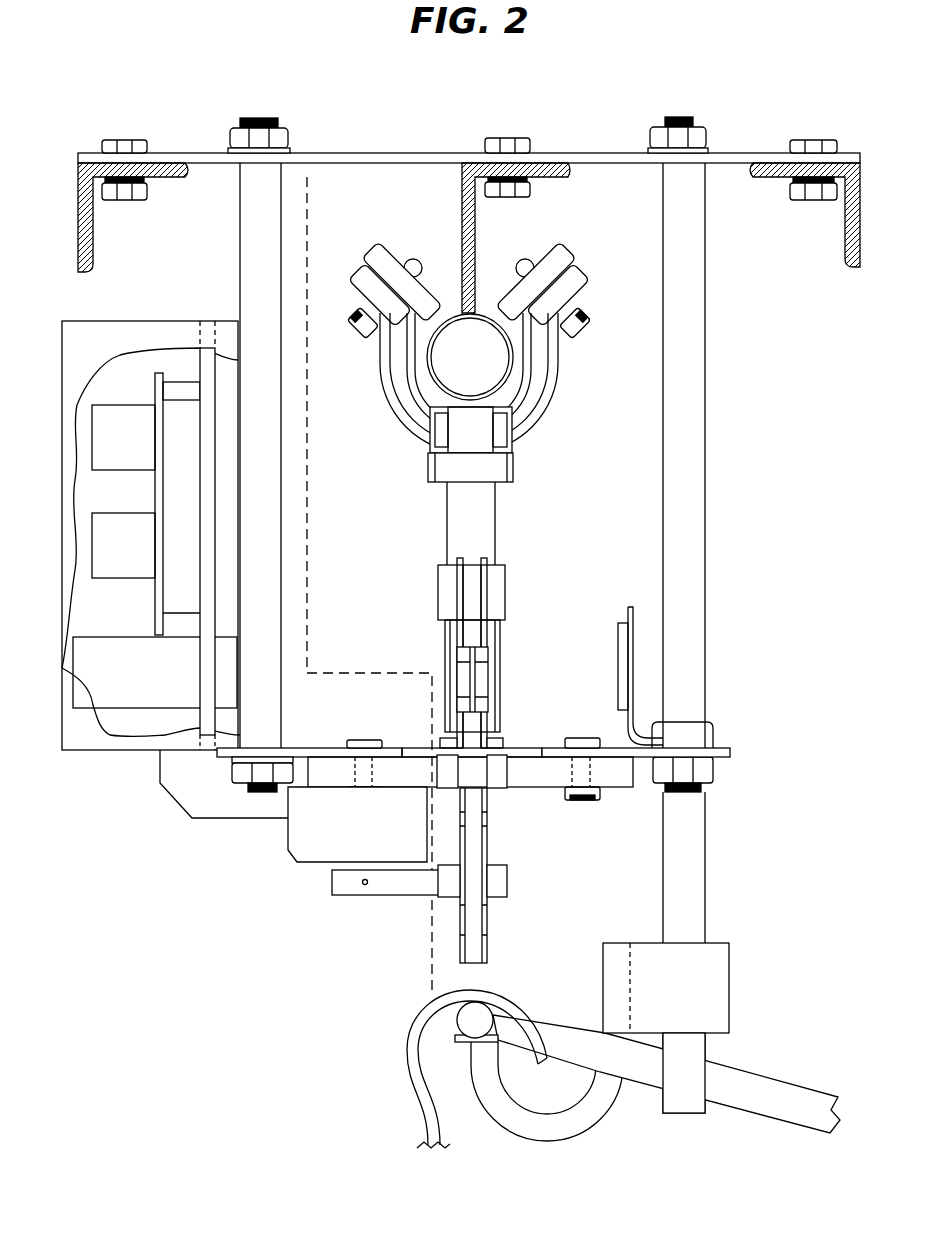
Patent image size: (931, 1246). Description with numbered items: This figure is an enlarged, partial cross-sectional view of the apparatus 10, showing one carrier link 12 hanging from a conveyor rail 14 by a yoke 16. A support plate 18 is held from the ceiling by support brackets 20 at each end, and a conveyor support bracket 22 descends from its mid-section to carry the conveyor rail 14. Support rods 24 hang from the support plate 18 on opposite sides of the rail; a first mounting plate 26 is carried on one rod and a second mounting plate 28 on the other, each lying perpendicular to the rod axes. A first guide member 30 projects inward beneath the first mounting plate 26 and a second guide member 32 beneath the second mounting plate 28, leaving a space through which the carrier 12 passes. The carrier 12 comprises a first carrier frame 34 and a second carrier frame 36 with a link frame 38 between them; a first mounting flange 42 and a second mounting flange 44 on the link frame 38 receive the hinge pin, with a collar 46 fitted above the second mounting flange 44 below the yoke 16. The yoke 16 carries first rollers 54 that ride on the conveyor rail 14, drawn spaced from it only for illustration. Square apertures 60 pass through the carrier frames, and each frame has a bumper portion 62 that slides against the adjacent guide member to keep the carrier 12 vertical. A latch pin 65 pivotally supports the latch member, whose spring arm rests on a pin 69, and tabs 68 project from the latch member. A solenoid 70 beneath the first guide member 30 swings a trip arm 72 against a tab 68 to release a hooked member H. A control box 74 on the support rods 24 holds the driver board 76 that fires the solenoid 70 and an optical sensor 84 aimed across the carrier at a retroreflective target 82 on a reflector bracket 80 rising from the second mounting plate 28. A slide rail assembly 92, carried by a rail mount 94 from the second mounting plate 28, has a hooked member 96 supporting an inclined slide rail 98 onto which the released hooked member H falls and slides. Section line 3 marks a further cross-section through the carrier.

The section line 3- 3 is at (303, 190).
The apparatus 10 is at (527, 124).
The carrier link 12 is at (516, 560).
The conveyor rail 14 is at (440, 332).
The yoke 16 is at (380, 400).
The support plate 18 is at (197, 153).
The support brackets 20 is at (93, 238).
The conveyor support bracket 22 is at (462, 212).
The support rods 24 is at (240, 228).
The first mounting plate 26 is at (325, 748).
The second mounting plate 28 is at (548, 748).
The first guide member 30 is at (418, 748).
The second guide member 32 is at (528, 788).
The first carrier frame 34 is at (458, 590).
The second carrier frame 36 is at (487, 590).
The link frame 38 is at (472, 558).
The first mounting flange 42 is at (500, 745).
The second mounting flange 44 is at (438, 605).
The collar 46 is at (447, 505).
The first rollers 54 is at (372, 255).
The square apertures 60 is at (488, 672).
The bumper portion 62 is at (508, 770).
The latch pin 65 is at (487, 815).
The tabs 68 is at (440, 852).
The pin 69 is at (460, 925).
The solenoid 70 is at (288, 835).
The trip arm 72 is at (405, 895).
The control box 74 is at (132, 321).
The driver board 76 is at (155, 495).
The reflector bracket 80 is at (628, 606).
The retroreflective target 82 is at (618, 645).
The optical sensor 84 is at (223, 637).
The slide rail assembly 92 is at (514, 995).
The rail mount 94 is at (683, 903).
The hooked member 96 is at (525, 1123).
The slide rail 98 is at (555, 1038).
The hooked member H is at (410, 1092).